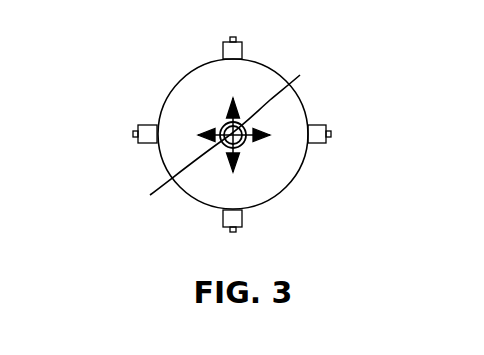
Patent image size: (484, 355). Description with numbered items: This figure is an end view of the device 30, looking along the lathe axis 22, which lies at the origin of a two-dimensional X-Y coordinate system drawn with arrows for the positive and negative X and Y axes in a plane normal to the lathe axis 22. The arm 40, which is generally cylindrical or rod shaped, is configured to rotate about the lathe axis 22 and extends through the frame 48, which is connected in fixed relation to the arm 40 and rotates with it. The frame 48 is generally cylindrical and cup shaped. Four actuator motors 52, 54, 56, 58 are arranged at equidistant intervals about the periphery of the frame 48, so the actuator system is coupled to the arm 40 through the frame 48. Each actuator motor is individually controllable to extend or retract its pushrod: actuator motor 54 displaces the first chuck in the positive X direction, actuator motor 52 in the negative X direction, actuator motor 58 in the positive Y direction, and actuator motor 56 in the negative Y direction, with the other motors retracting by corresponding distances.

The device 30 is at (116, 34).
The frame 48 is at (282, 195).
The actuator motor 52 is at (320, 144).
The actuator motor 54 is at (142, 144).
The actuator motor 56 is at (220, 48).
The actuator motor 58 is at (222, 218).
The lathe axis 22 is at (212, 148).
The arm 40 is at (246, 128).